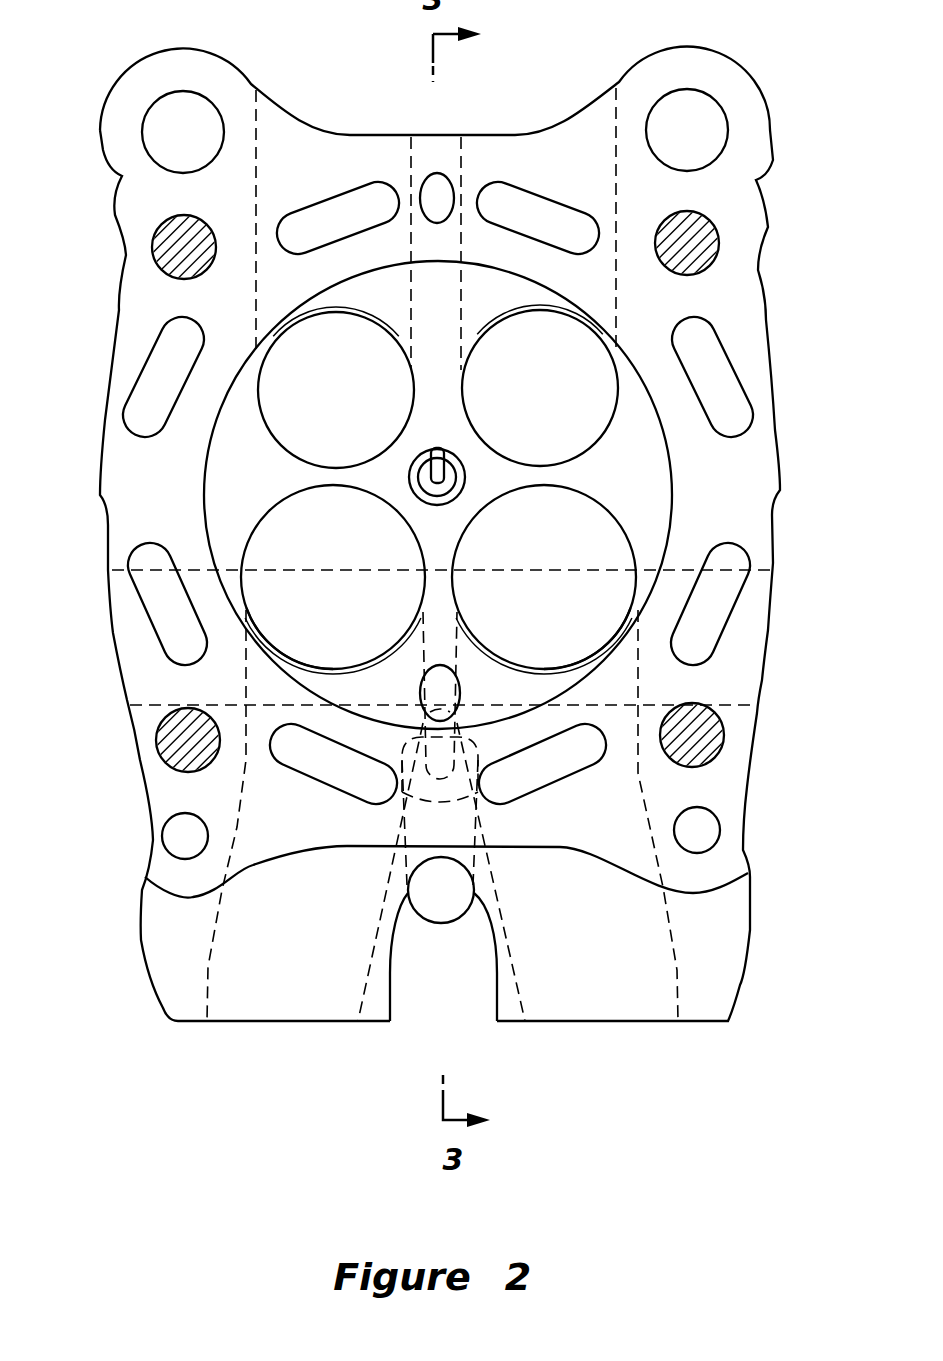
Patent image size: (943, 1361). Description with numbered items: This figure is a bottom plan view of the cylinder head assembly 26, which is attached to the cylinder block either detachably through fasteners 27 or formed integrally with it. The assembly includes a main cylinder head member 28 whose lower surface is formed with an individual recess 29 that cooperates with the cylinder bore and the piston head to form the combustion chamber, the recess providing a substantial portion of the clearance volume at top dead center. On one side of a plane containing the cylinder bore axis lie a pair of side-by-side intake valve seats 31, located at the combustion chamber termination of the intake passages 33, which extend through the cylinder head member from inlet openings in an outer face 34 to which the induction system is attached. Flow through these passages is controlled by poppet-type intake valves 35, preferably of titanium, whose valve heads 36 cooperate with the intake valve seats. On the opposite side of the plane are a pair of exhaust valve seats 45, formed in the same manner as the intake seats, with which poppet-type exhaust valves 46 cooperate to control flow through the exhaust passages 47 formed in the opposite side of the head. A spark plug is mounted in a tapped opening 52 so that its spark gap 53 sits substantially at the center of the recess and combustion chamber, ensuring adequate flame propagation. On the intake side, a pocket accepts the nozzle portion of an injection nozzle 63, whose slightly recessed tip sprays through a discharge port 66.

The cylinder head assembly 26 is at (172, 962).
The fasteners 27 is at (168, 755).
The main cylinder head member 28 is at (762, 693).
The recess 29 is at (232, 492).
The intake valve seats 31 is at (272, 526).
The intake passages 33 is at (208, 969).
The outer face 34 is at (378, 1024).
The intake valves 35 is at (233, 569).
The valve heads 36 is at (255, 603).
The exhaust valve seats 45 is at (278, 447).
The exhaust valves 46 is at (257, 399).
The exhaust passages 47 is at (258, 171).
The tapped opening 52 is at (412, 485).
The spark gap 53 is at (470, 463).
The injection nozzle 63 is at (432, 898).
The discharge port 66 is at (458, 680).